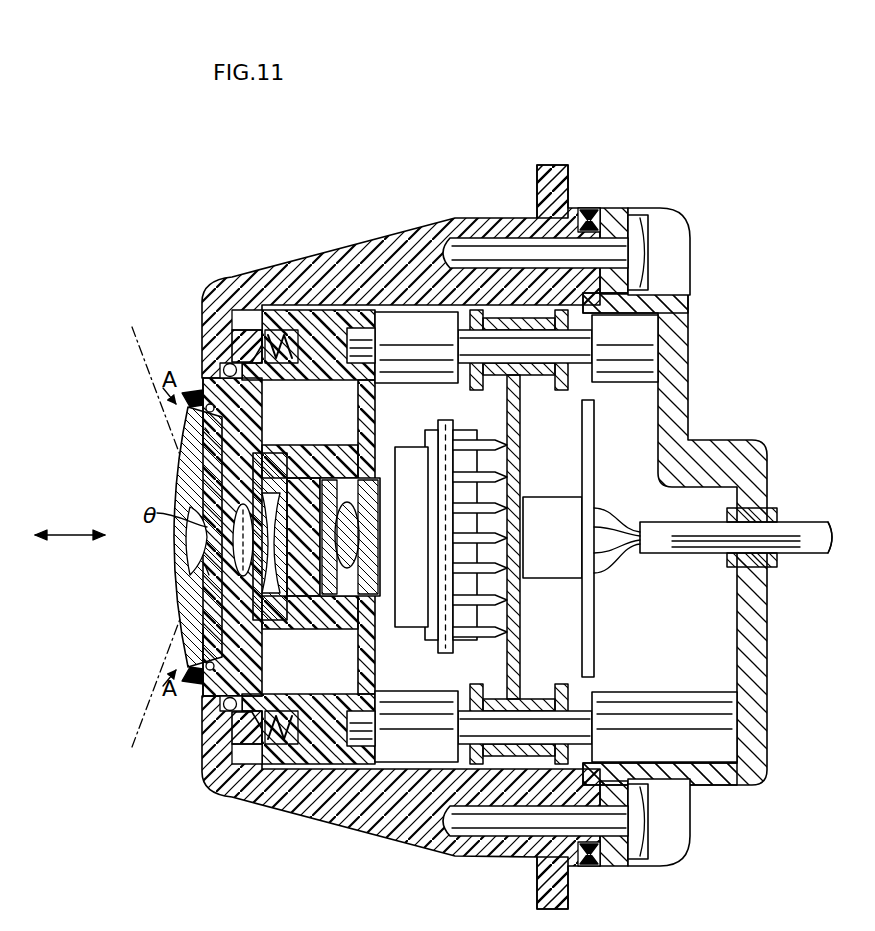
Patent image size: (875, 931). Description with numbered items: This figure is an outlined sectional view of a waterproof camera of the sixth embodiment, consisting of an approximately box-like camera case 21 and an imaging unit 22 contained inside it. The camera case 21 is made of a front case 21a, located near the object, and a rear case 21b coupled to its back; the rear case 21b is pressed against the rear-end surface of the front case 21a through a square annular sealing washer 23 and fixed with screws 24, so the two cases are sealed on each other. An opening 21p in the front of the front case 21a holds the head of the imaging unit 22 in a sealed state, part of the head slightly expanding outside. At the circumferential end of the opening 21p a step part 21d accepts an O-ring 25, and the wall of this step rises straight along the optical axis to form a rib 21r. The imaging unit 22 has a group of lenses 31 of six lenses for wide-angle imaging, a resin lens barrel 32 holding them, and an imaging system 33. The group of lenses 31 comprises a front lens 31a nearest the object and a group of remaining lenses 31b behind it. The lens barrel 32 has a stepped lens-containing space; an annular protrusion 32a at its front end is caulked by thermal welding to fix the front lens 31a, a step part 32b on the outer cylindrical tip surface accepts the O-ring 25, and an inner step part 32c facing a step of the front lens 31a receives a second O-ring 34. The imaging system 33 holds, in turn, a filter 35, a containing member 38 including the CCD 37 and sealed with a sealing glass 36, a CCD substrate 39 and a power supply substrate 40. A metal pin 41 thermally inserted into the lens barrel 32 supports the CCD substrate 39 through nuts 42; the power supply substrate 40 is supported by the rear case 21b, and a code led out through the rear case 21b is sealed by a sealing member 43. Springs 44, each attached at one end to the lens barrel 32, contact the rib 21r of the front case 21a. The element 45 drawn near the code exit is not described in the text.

The camera case 21 is at (700, 140).
The front case 21a is at (552, 172).
The rear case 21b is at (622, 208).
The step part 21d is at (205, 357).
The opening 21p is at (194, 392).
The rib 21r is at (249, 337).
The imaging unit 22 is at (630, 470).
The sealing washer 23 is at (598, 222).
The screws 24 is at (650, 248).
The O-ring 25 is at (228, 363).
The group of lenses 31 is at (206, 544).
The front lens 31a is at (178, 480).
The group of remaining lenses 31b is at (350, 657).
The lens barrel 32 is at (336, 318).
The annular protrusion 32a is at (197, 668).
The step part 32b is at (200, 397).
The step part 32c is at (193, 656).
The imaging system 33 is at (609, 633).
The O-ring 34 is at (200, 657).
The filter 35 is at (407, 450).
The sealing glass 36 is at (433, 640).
The CCD 37 is at (446, 430).
The containing member 38 is at (462, 642).
The CCD substrate 39 is at (521, 430).
The power supply substrate 40 is at (596, 440).
The metal pin 41 is at (657, 306).
The nuts 42 is at (547, 320).
The sealing member 43 is at (552, 497).
The springs 44 is at (278, 343).
The cable bushing 45 is at (777, 510).